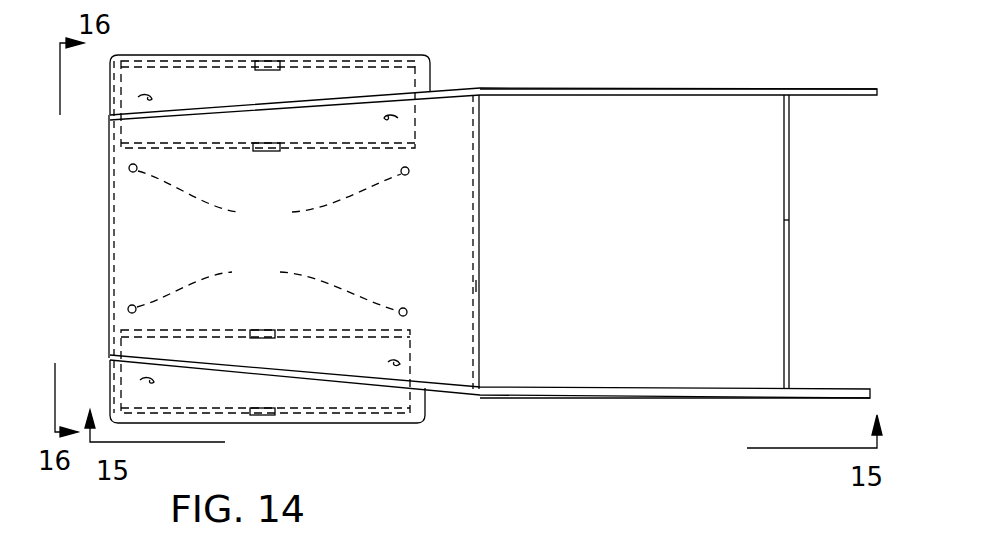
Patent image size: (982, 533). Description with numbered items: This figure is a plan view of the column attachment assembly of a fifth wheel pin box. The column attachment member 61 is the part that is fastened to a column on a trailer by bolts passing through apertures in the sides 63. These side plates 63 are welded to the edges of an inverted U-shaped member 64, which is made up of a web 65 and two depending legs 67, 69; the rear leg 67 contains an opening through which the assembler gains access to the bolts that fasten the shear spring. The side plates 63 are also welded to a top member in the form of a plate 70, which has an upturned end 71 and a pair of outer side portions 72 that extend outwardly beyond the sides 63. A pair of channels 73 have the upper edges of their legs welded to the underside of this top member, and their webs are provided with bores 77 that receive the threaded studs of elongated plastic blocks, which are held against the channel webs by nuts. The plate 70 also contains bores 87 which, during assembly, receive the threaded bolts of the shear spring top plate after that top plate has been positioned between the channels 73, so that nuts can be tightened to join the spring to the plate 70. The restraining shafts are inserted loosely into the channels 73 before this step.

The column attachment member 61 is at (745, 88).
The sides 63 is at (632, 88).
The inverted U-shaped member 64 is at (450, 235).
The web 65 is at (455, 183).
The depending leg 67 is at (474, 286).
The depending leg 69 is at (108, 228).
The plate 70 is at (770, 178).
The upturned end 71 is at (790, 232).
The outer side portions 72 is at (210, 92).
The channels 73 is at (292, 84).
The bores 77 is at (130, 97).
The bores 87 is at (268, 240).